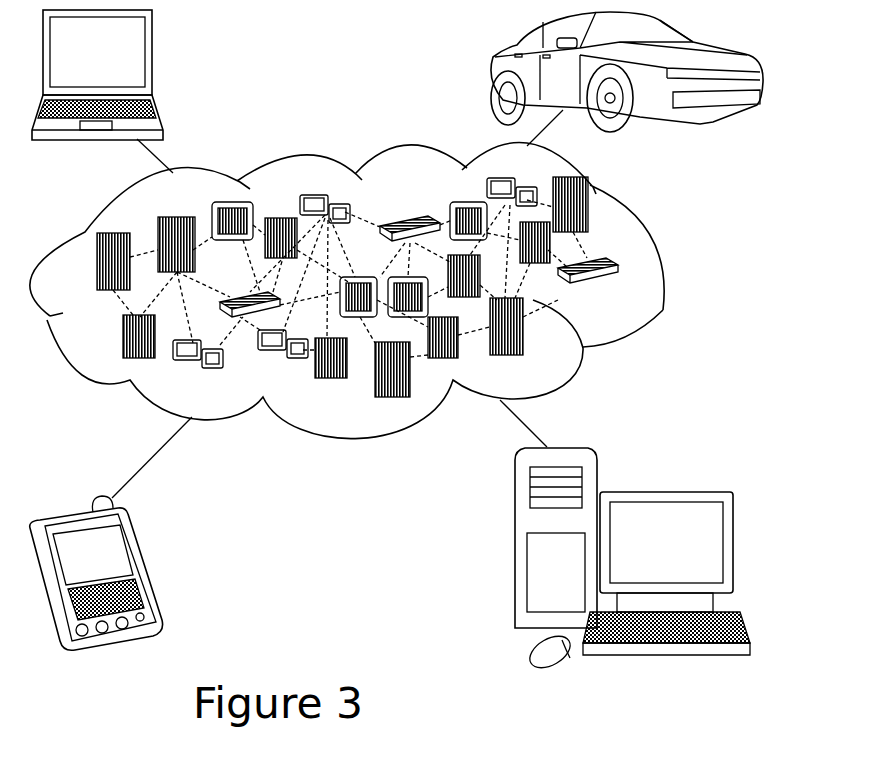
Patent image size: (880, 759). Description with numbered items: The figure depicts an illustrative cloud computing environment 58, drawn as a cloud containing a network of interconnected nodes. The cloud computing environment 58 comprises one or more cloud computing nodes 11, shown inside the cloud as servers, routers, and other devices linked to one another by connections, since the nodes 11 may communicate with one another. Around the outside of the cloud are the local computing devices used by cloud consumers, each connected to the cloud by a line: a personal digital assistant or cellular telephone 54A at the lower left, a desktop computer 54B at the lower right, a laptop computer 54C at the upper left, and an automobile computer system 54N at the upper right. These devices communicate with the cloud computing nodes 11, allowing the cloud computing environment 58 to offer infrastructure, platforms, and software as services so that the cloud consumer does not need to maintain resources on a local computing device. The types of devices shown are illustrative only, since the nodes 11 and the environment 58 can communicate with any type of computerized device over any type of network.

The cloud computing nodes 11 is at (375, 290).
The cloud computing environment 58 is at (663, 271).
The personal digital assistant or cellular telephone 54A is at (143, 566).
The desktop computer 54B is at (662, 490).
The laptop computer 54C is at (153, 60).
The automobile computer system 54N is at (490, 70).